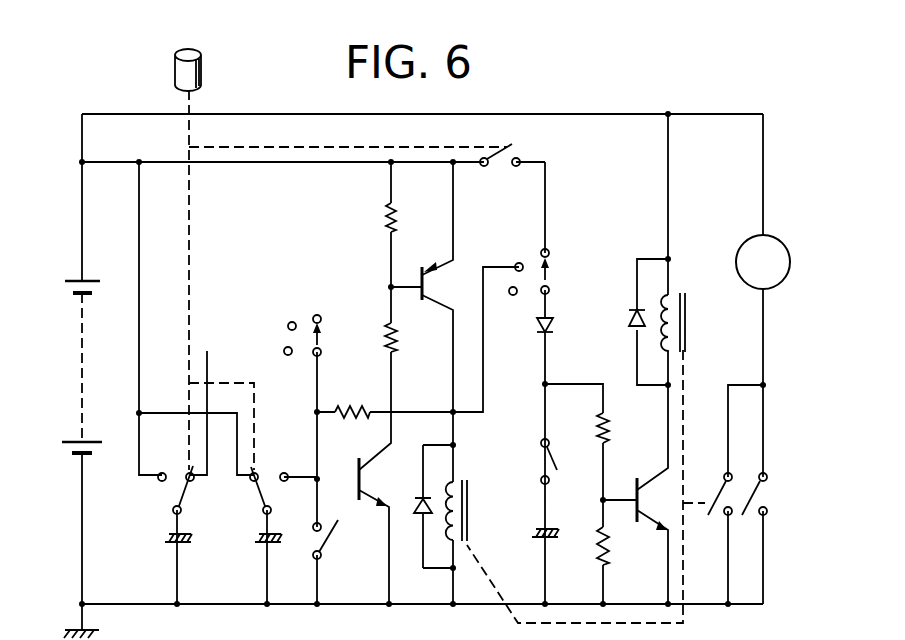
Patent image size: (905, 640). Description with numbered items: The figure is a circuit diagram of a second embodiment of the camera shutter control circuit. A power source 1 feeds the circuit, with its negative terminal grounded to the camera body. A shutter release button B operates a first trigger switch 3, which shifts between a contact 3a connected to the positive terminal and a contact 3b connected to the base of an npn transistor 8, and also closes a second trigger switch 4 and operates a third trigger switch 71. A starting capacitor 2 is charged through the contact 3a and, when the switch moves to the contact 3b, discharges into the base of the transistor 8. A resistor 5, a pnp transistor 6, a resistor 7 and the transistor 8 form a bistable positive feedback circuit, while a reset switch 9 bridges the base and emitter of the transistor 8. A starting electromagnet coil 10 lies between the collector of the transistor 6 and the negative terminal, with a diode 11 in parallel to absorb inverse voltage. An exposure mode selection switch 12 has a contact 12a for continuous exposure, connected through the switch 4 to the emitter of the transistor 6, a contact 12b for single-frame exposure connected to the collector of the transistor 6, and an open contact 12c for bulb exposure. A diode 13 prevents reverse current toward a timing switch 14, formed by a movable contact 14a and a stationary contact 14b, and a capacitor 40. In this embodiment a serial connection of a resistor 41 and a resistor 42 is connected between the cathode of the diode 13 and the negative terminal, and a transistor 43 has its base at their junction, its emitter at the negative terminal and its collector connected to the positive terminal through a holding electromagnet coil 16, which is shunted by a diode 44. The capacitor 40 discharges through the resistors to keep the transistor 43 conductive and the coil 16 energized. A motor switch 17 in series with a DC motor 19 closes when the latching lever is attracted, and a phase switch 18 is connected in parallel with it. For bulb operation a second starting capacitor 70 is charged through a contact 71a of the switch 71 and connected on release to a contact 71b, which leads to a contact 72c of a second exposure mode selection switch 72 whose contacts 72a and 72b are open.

The shutter release button B is at (201, 70).
The power source 1 is at (84, 358).
The starting capacitor 2 is at (252, 548).
The first trigger switch 3 is at (262, 486).
The contact 3a is at (252, 481).
The contact 3b is at (286, 481).
The second trigger switch 4 is at (522, 156).
The resistor 5 is at (397, 340).
The pnp transistor 6 is at (430, 290).
The resistor 7 is at (350, 400).
The npn transistor 8 is at (366, 476).
The reset switch 9 is at (330, 538).
The starting electromagnet coil 10 is at (470, 512).
The diode 11 is at (417, 515).
The exposure mode selection switch 12 is at (548, 287).
The contact 12a is at (548, 249).
The contact 12b is at (516, 263).
The contact 12c is at (513, 295).
The diode 13 is at (538, 338).
The timing switch 14 is at (540, 481).
The movable contact 14a is at (540, 445).
The stationary contact 14b is at (552, 460).
The holding electromagnet coil 16 is at (682, 292).
The motor switch 17 is at (718, 495).
The phase switch 18 is at (753, 497).
The DC motor 19 is at (744, 244).
The capacitor 40 is at (552, 530).
The resistor 41 is at (609, 432).
The resistor 42 is at (609, 545).
The transistor 43 is at (640, 485).
The diode 44 is at (628, 320).
The second starting capacitor 70 is at (160, 546).
The third trigger switch 71 is at (183, 485).
The contact 71a is at (161, 481).
The contact 71b is at (193, 480).
The second exposure mode selection switch 72 is at (320, 345).
The contact 72a is at (318, 314).
The contact 72b is at (290, 322).
The contact 72c is at (285, 348).